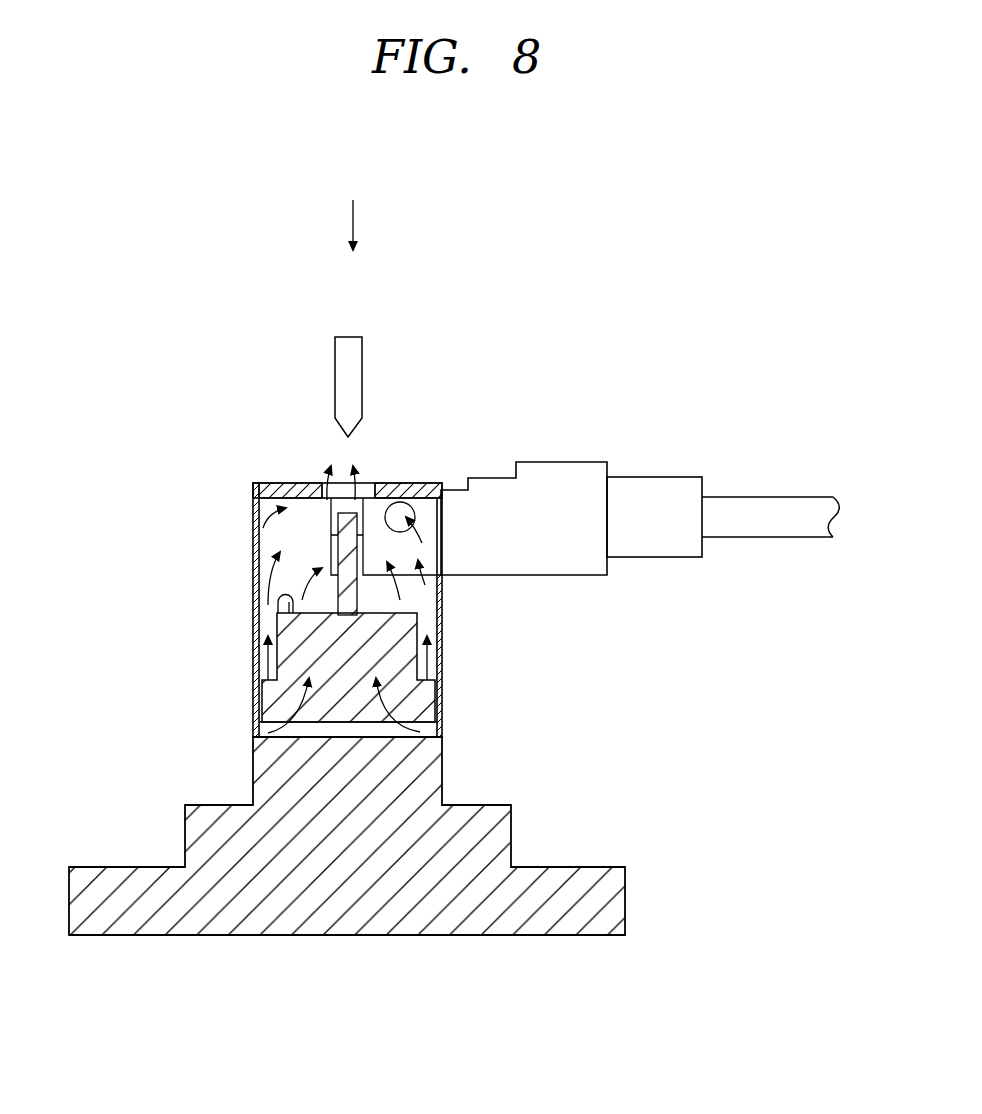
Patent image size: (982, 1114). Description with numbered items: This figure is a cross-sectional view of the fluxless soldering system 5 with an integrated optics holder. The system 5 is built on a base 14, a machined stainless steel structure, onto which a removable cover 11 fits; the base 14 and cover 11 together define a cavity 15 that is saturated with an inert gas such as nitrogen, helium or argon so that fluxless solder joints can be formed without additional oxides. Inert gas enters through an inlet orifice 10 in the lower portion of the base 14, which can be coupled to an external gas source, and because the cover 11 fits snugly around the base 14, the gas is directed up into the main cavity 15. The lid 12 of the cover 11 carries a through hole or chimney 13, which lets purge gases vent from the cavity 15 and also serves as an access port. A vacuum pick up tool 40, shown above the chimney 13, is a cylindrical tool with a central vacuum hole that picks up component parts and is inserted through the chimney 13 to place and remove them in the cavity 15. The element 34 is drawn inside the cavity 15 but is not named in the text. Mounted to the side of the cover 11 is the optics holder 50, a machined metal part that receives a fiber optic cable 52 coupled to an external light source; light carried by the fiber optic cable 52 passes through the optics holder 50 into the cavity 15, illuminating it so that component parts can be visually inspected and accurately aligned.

The system 5 is at (364, 196).
The inlet orifice 10 is at (444, 730).
The cover 11 is at (444, 670).
The lid 12 is at (417, 486).
The chimney 13 is at (364, 486).
The base 14 is at (597, 855).
The cavity 15 is at (268, 567).
The central pin 34 is at (346, 537).
The vacuum pick up tool 40 is at (335, 362).
The optics holder 50 is at (558, 500).
The fiber optic cable 52 is at (657, 500).